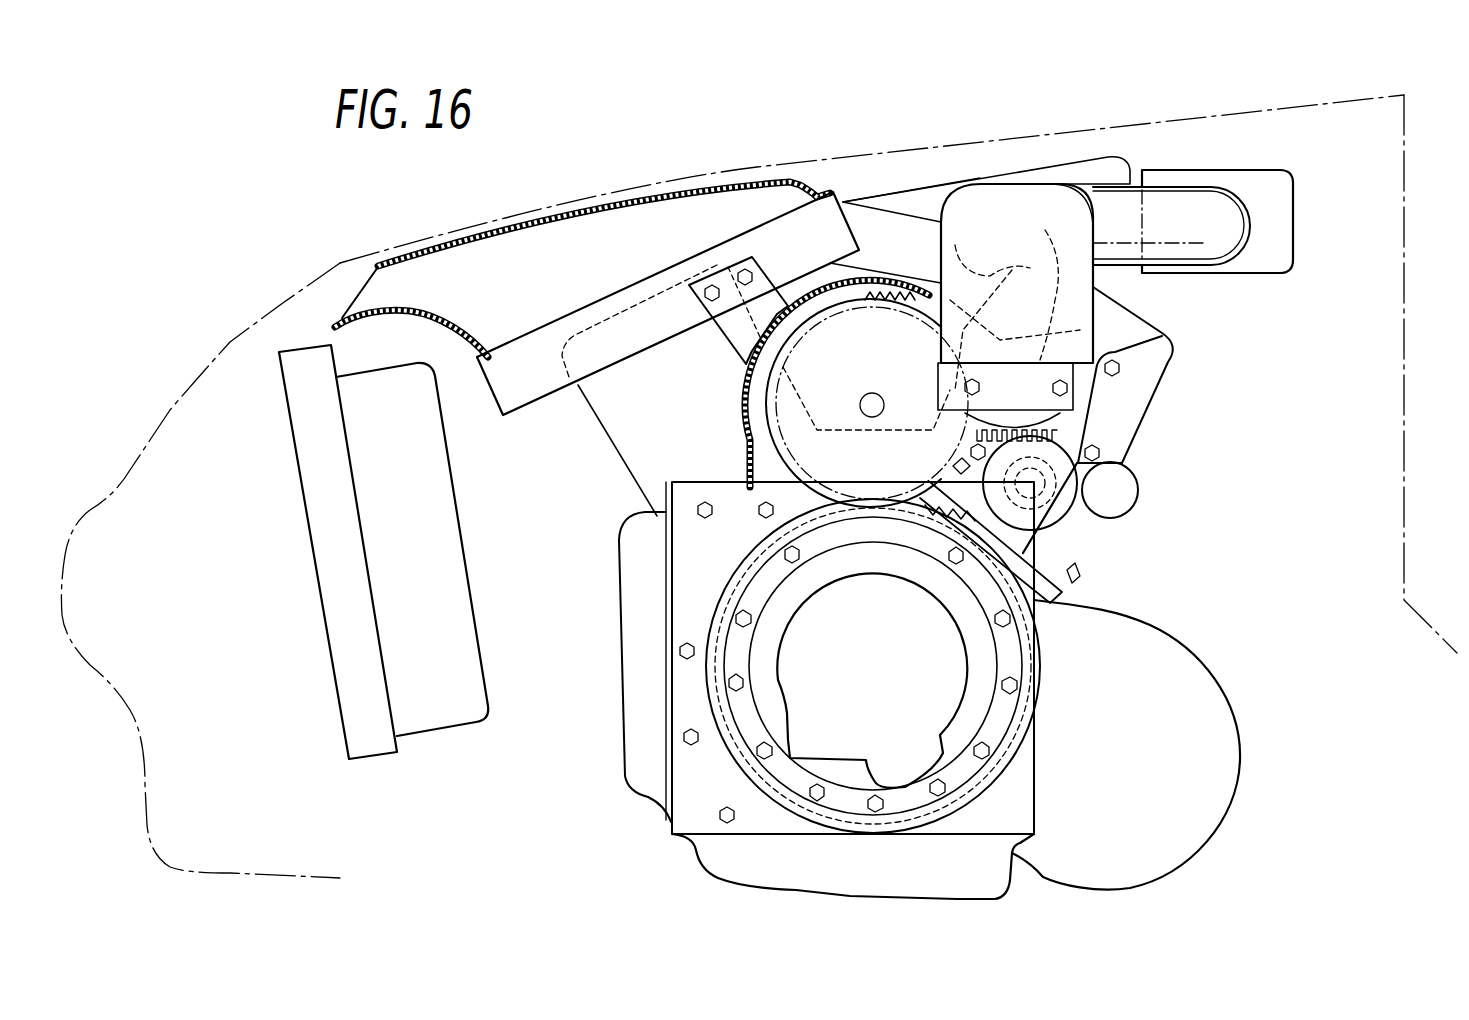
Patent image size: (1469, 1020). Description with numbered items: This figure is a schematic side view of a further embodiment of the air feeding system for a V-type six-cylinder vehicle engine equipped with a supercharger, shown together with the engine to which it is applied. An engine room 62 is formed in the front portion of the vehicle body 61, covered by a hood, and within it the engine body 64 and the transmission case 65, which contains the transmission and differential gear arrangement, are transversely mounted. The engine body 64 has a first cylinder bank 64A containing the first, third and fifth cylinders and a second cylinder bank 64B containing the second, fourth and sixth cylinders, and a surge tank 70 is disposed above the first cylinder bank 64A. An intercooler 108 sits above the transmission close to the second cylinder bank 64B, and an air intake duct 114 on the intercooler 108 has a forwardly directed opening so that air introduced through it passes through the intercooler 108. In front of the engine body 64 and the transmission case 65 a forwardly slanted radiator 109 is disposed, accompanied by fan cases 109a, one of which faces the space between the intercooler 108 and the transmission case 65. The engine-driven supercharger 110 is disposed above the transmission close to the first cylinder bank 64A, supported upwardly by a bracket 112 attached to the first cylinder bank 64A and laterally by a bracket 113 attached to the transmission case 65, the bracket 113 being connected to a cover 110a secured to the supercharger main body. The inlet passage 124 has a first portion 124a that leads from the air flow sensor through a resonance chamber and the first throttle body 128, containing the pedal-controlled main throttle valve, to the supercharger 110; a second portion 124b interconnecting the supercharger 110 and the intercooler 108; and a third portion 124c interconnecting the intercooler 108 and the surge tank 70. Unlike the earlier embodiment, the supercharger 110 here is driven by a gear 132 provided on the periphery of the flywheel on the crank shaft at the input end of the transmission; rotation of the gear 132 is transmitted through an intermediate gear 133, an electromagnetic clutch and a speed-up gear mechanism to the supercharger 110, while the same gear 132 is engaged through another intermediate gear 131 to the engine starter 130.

The vehicle body 61 is at (330, 266).
The engine room 62 is at (222, 565).
The engine body 64 is at (1136, 433).
The first cylinder bank 64A is at (1157, 370).
The second cylinder bank 64B is at (636, 476).
The transmission case 65 is at (697, 818).
The surge tank 70 is at (1020, 176).
The intercooler 108 is at (525, 397).
The radiator 109 is at (367, 747).
The fan case 109a is at (460, 720).
The engine-driven supercharger 110 is at (961, 312).
The cover 110a is at (1063, 200).
The bracket 112 is at (1120, 347).
The bracket 113 is at (727, 357).
The air intake duct 114 is at (650, 195).
The inlet passage 124 is at (1158, 184).
The first portion of inlet passage 124a is at (1200, 195).
The second portion of inlet passage 124b is at (880, 222).
The third portion of inlet passage 124c is at (940, 188).
The first throttle body 128 is at (1285, 178).
The engine starter 130 is at (1062, 508).
The intermediate gear 131 is at (1057, 560).
The gear 132 is at (907, 517).
The intermediate gear 133 is at (795, 441).